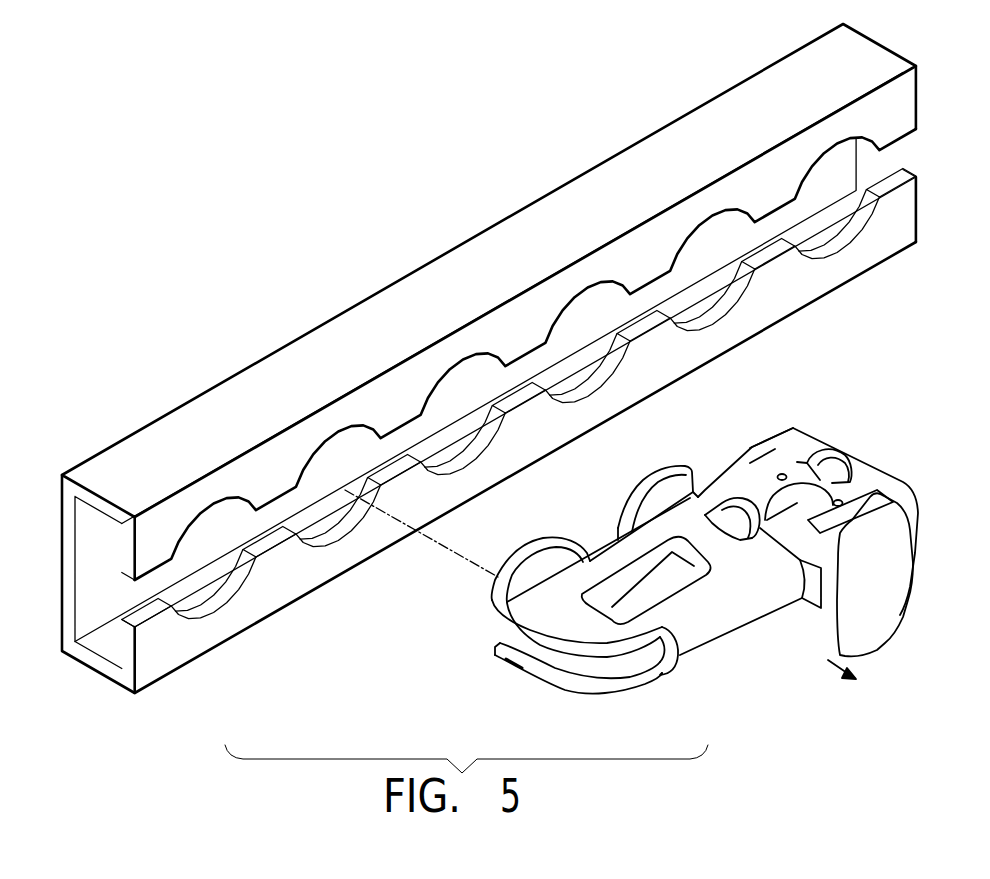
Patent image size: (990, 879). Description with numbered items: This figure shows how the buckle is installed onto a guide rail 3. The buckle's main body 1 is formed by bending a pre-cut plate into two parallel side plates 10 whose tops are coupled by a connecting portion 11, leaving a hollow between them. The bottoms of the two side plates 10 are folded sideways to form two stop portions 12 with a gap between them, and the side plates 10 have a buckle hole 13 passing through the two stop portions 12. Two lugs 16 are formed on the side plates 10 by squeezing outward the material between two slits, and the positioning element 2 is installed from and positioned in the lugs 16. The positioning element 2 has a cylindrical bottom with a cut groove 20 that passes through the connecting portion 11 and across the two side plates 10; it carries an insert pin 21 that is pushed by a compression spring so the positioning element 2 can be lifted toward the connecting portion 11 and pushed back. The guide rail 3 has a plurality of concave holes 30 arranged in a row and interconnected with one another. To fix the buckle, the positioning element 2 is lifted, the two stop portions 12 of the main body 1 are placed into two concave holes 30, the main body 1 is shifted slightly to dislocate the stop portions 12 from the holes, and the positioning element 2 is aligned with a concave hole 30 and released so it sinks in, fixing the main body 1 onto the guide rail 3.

The main body 1 is at (670, 568).
The positioning element 2 is at (858, 527).
The guide rail 3 is at (489, 358).
The side plates 10 is at (510, 622).
The connecting portion 11 is at (705, 660).
The stop portions 12 is at (527, 540).
The buckle hole 13 is at (619, 563).
The lugs 16 is at (740, 522).
The cut groove 20 is at (800, 612).
The insert pin 21 is at (786, 473).
The concave holes 30 is at (222, 600).